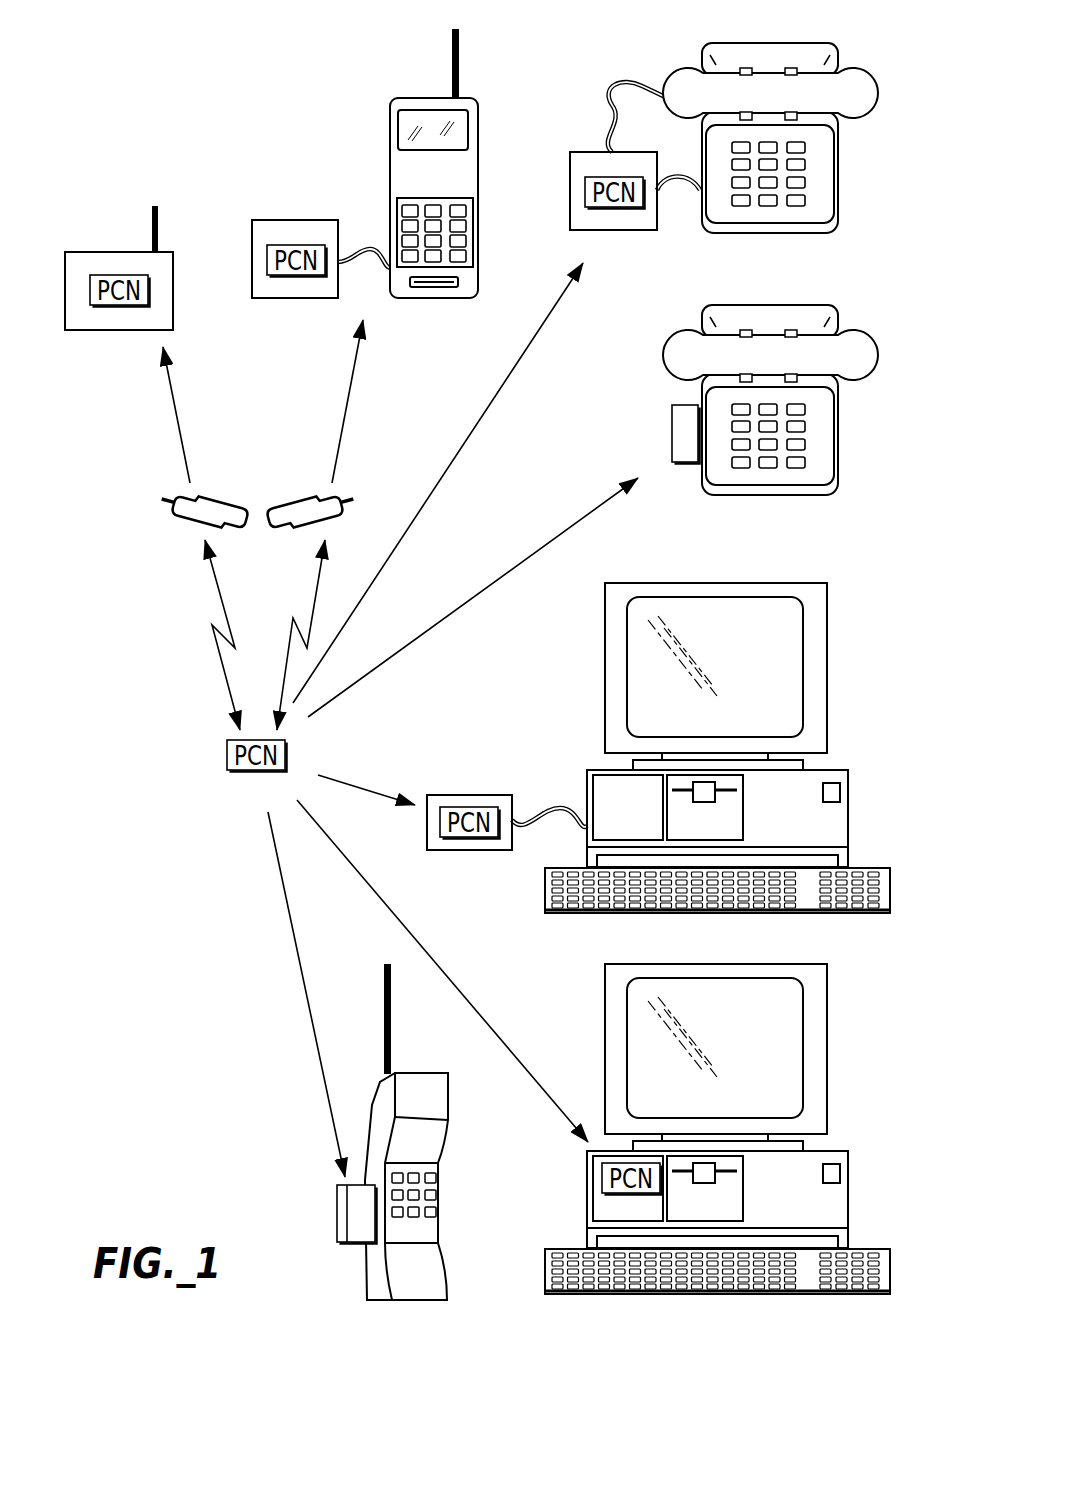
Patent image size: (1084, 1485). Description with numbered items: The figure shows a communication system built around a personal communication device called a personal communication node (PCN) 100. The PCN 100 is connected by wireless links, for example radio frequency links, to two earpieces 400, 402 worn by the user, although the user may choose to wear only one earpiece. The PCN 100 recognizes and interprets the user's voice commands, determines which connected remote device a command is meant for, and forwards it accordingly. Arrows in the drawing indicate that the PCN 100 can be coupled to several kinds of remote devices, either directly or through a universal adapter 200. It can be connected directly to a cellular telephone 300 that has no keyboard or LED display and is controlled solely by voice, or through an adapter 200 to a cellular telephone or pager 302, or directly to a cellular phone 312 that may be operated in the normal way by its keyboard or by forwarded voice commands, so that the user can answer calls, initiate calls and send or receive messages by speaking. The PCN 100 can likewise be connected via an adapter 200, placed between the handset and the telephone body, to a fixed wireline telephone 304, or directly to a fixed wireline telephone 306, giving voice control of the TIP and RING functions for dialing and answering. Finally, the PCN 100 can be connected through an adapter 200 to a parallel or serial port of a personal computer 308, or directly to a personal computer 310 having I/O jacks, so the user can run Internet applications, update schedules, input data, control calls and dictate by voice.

The personal communication node (PCN) 100 is at (227, 755).
The universal adapter 200 is at (320, 220).
The cellular telephone 300 is at (119, 268).
The cellular telephone or pager 302 is at (438, 96).
The fixed wireline telephone 304 is at (768, 43).
The fixed wireline telephone 306 is at (772, 305).
The personal computer 308 is at (603, 675).
The personal computer 310 is at (604, 1035).
The cellular phone 312 is at (448, 1082).
The earpiece 400 is at (182, 498).
The earpiece 402 is at (302, 495).